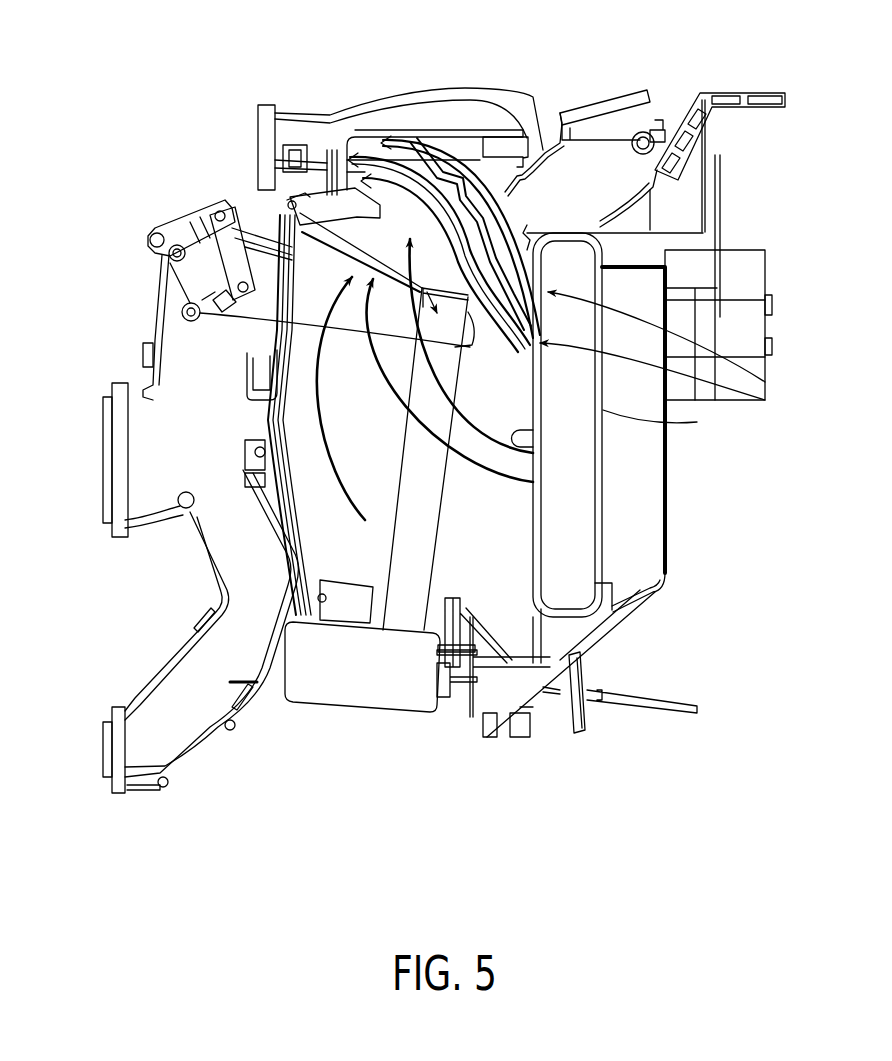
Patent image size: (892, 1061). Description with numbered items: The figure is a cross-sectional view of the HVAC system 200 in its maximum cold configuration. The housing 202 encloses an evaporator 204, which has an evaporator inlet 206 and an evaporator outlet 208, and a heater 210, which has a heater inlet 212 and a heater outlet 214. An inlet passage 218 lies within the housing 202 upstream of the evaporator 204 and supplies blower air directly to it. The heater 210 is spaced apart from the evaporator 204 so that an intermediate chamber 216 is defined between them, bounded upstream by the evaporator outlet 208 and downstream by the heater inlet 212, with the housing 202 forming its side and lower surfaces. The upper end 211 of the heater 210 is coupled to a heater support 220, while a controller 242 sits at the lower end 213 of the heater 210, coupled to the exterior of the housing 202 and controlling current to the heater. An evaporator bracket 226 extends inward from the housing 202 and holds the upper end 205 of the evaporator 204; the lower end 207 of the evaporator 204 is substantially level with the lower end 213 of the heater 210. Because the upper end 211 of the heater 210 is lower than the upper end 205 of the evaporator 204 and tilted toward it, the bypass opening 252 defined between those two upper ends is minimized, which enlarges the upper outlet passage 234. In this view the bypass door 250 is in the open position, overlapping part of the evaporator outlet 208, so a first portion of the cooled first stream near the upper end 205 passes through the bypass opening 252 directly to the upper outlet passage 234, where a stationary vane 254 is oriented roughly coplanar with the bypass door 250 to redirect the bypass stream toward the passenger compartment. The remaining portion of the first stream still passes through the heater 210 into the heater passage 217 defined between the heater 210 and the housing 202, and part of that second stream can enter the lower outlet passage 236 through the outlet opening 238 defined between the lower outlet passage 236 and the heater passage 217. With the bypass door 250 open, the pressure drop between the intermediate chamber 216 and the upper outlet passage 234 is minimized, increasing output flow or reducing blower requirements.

The HVAC system 200 is at (207, 86).
The housing 202 is at (548, 158).
The evaporator 204 is at (580, 500).
The upper end of the evaporator 205 is at (580, 268).
The evaporator inlet 206 is at (697, 422).
The lower end of the evaporator 207 is at (558, 584).
The evaporator outlet 208 is at (533, 452).
The heater 210 is at (413, 470).
The upper end of the heater 211 is at (406, 233).
The heater inlet 212 is at (533, 560).
The lower end of the heater 213 is at (398, 632).
The heater outlet 214 is at (370, 482).
The intermediate chamber 216 is at (499, 446).
The heater passage 217 is at (343, 410).
The inlet passage 218 is at (636, 342).
The heater support 220 is at (181, 312).
The evaporator bracket 226 is at (577, 220).
The upper outlet passage 234 is at (347, 144).
The lower outlet passage 236 is at (234, 372).
The outlet opening 238 is at (292, 283).
The controller 242 is at (322, 683).
The bypass door 250 is at (480, 165).
The bypass opening 252 is at (765, 400).
The vane 254 is at (435, 165).